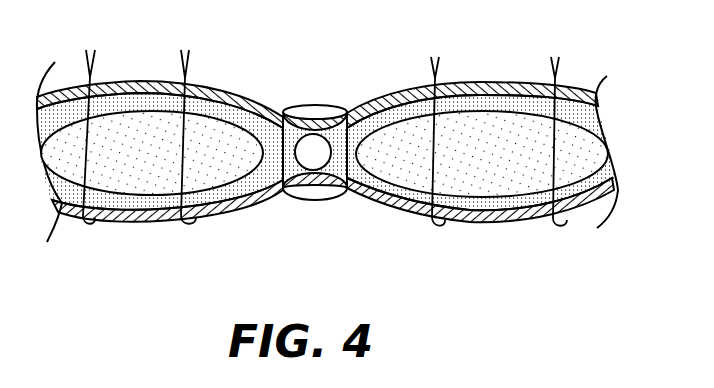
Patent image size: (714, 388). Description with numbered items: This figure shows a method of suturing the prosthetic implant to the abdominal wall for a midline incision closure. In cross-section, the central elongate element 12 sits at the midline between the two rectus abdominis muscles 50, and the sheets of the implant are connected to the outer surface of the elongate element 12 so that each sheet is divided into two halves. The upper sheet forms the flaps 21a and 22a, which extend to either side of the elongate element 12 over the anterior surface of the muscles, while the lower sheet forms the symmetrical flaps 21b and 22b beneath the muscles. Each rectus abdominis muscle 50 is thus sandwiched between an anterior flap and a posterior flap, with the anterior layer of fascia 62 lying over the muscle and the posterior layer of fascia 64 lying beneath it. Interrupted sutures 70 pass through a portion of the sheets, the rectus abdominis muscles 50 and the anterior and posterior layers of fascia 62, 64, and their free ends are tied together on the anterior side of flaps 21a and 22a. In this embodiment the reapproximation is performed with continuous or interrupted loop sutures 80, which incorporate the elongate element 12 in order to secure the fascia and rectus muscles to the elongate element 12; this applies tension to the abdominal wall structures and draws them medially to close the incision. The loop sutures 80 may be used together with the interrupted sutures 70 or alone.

The elongate element 12 is at (311, 155).
The flap 21a is at (227, 98).
The flap 21b is at (228, 208).
The flap 22a is at (393, 98).
The flap 22b is at (391, 200).
The rectus abdominis muscles 50 is at (147, 160).
The anterior layer of fascia 62 is at (120, 100).
The posterior layer of fascia 64 is at (73, 200).
The sutures 70 is at (438, 82).
The loop sutures 80 is at (318, 105).